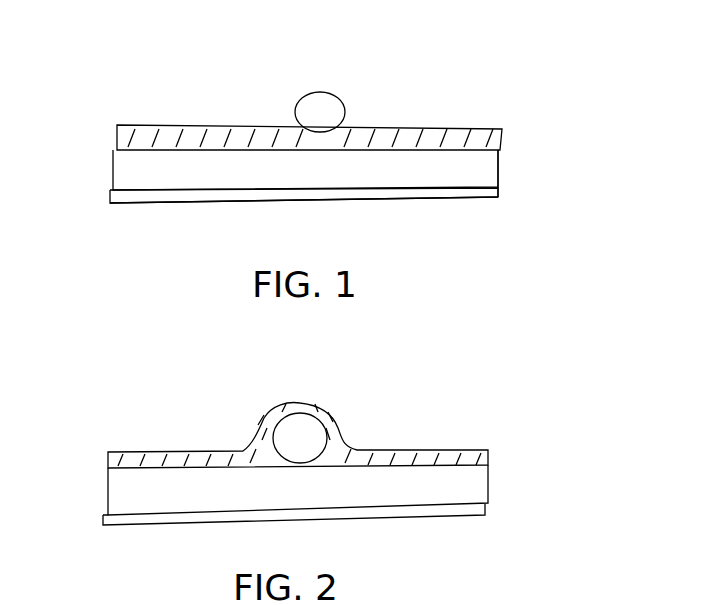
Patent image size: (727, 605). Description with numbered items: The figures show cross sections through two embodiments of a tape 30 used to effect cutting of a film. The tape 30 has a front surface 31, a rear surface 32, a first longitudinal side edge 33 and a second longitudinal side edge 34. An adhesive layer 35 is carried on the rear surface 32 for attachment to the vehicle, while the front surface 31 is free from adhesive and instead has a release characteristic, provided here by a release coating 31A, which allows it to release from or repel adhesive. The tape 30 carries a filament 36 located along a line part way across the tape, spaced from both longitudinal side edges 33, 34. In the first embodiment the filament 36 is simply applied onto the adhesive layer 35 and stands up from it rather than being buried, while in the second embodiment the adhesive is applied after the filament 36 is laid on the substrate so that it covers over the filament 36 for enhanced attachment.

In FIG. 1, the tape 30 is at (337, 204).
In FIG. 1, the front surface 31 is at (427, 188).
In FIG. 1, the release coating 31A is at (147, 203).
In FIG. 2, the release coating 31A is at (438, 513).
In FIG. 1, the rear surface 32 is at (423, 133).
In FIG. 1, the first longitudinal side edge 33 is at (113, 176).
In FIG. 1, the second longitudinal side edge 34 is at (503, 173).
In FIG. 1, the adhesive layer 35 is at (140, 140).
In FIG. 1, the filament 36 is at (320, 108).
In FIG. 2, the filament 36 is at (297, 447).